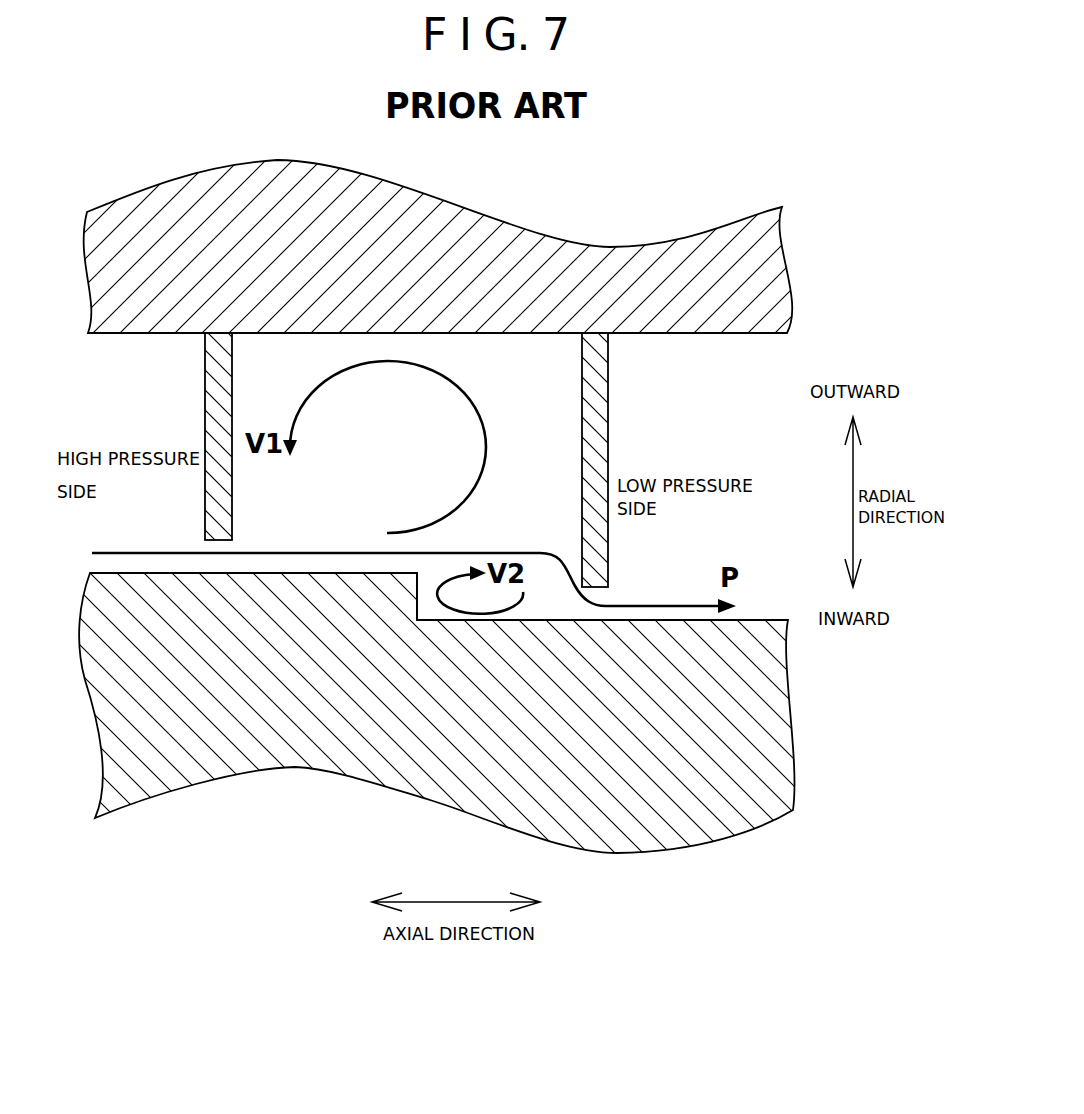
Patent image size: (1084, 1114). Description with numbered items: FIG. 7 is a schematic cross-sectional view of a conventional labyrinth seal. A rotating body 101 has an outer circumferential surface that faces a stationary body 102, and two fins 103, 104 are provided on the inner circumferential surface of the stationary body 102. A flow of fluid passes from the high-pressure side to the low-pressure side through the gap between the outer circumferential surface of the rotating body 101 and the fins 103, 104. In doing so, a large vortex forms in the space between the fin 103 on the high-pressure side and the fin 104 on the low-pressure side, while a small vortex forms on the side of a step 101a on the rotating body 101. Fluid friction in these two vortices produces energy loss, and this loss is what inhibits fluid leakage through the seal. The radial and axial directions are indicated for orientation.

The rotating body 101 is at (785, 737).
The step 101a is at (429, 610).
The stationary body 102 is at (777, 275).
The fin 103 is at (213, 410).
The fin 104 is at (603, 405).